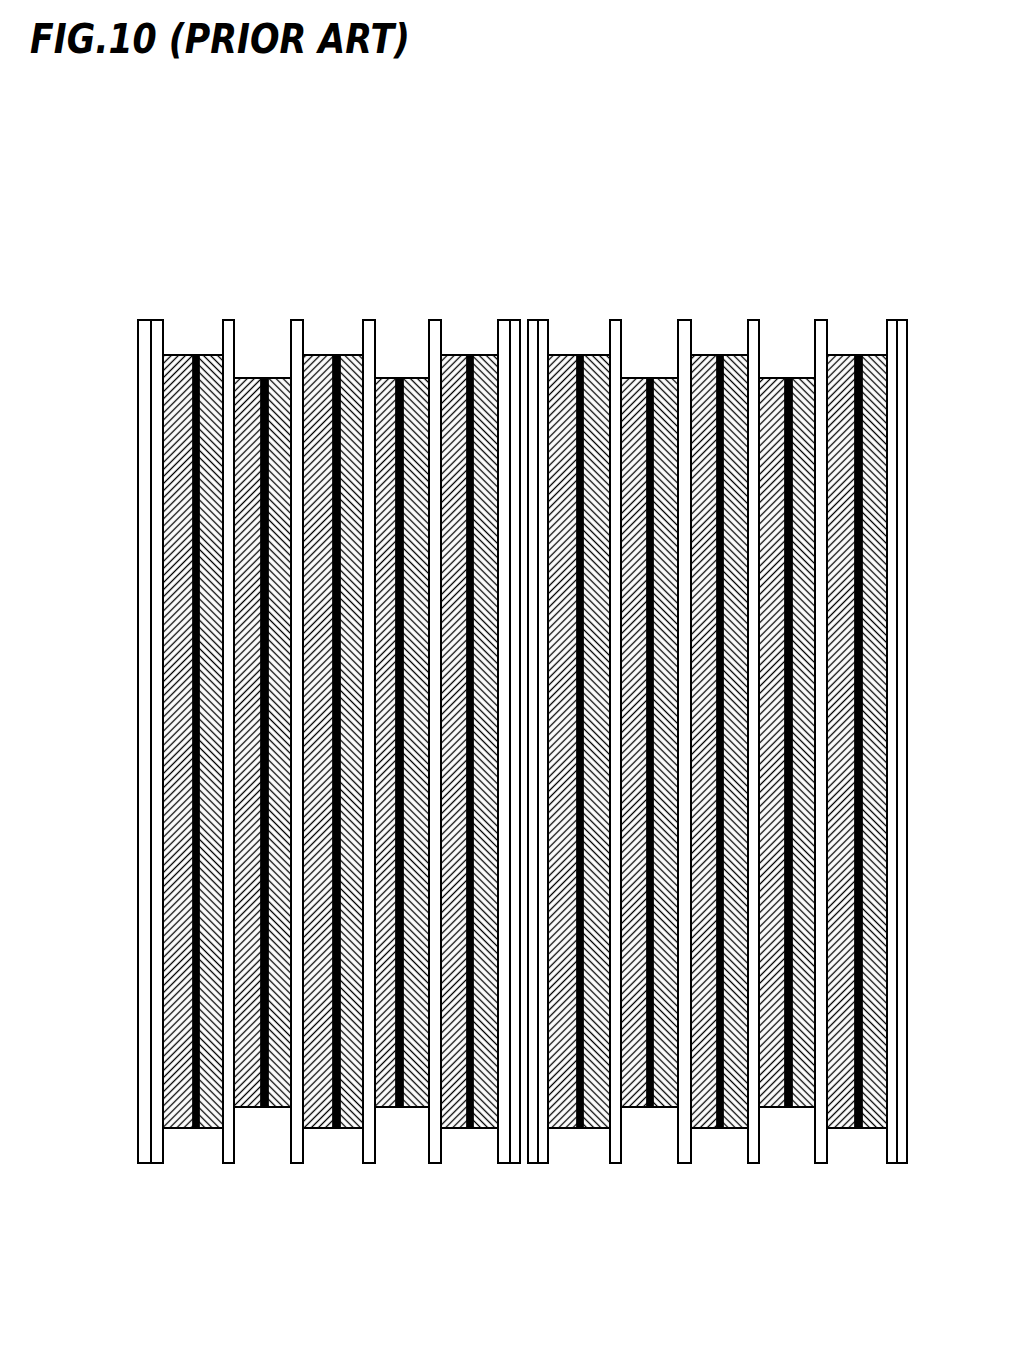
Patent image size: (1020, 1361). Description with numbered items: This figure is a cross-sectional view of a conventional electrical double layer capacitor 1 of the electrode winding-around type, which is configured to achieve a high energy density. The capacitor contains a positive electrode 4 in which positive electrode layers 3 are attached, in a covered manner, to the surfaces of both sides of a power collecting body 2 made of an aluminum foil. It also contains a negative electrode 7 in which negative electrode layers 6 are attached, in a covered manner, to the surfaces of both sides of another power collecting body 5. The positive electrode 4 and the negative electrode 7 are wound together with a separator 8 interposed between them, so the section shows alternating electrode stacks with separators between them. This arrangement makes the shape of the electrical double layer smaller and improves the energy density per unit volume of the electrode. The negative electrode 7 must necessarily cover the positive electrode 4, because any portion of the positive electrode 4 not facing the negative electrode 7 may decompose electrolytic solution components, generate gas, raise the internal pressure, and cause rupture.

The electrical double layer capacitor 1 is at (572, 130).
The power collecting body 2 is at (262, 1083).
The positive electrode layers 3 is at (287, 1107).
The positive electrode 4 is at (291, 375).
The power collecting body 5 is at (340, 1083).
The negative electrode layers 6 is at (357, 1128).
The negative electrode 7 is at (363, 355).
The separator 8 is at (621, 319).